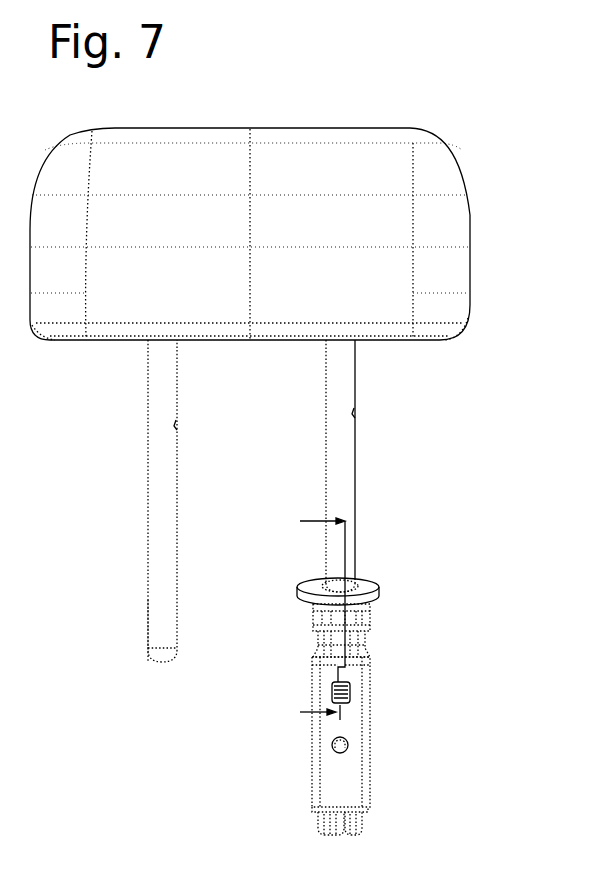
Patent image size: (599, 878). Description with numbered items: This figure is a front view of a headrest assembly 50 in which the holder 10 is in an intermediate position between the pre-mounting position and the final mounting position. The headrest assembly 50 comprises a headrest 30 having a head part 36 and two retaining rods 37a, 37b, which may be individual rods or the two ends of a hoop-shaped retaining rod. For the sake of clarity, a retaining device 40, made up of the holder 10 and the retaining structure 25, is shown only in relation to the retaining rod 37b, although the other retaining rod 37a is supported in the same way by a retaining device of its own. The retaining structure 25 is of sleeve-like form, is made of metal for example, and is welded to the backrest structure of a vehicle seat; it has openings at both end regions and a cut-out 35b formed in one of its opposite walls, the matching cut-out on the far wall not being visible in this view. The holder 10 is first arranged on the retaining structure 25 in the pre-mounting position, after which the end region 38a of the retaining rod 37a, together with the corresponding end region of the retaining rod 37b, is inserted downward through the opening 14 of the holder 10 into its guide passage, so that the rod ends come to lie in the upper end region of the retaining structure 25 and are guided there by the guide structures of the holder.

The headrest 30 is at (282, 207).
The head part 36 is at (383, 155).
The retaining rod 37a is at (168, 400).
The retaining rod 37b is at (350, 400).
The end region 38a is at (127, 606).
The headrest assembly 50 is at (362, 609).
The opening 14 is at (366, 570).
The retaining device 40 is at (378, 646).
The holder 10 is at (323, 737).
The retaining structure 25 is at (320, 778).
The cut-out 35b is at (352, 700).